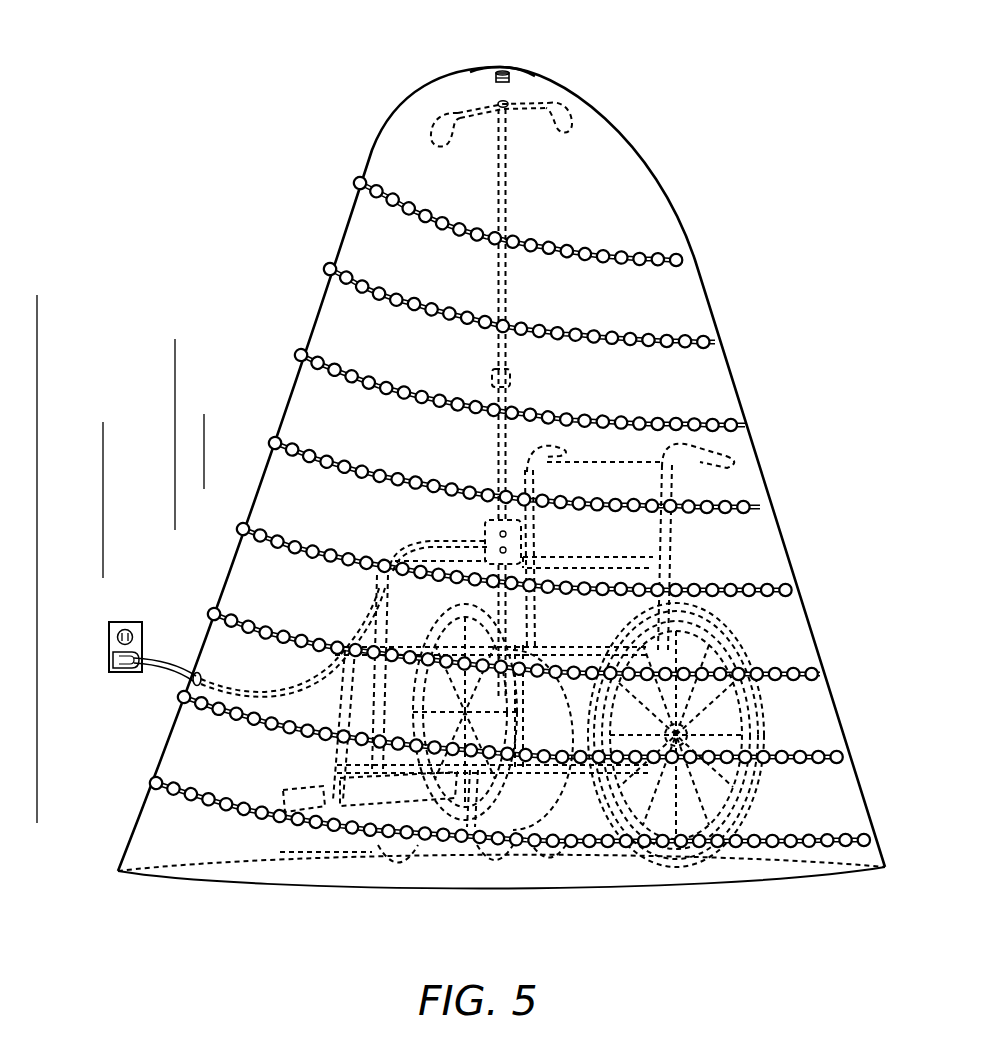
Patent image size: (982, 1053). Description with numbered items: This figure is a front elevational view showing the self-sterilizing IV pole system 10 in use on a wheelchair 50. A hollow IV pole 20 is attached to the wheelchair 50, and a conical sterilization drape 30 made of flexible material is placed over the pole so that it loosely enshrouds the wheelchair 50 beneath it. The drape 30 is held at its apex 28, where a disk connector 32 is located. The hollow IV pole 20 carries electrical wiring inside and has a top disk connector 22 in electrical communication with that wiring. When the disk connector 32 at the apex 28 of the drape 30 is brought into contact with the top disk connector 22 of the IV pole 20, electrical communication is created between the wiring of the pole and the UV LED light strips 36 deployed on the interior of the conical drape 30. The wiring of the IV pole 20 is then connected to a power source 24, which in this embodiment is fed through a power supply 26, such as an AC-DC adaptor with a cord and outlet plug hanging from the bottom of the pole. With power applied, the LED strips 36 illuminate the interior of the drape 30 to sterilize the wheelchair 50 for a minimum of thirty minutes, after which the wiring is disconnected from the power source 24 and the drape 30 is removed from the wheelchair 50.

The self-sterilizing IV pole system 10 is at (372, 88).
The IV pole 20 is at (510, 293).
The top disk connector 22 is at (506, 103).
The power source 24 is at (172, 665).
The power supply 26 is at (491, 520).
The apex 28 is at (486, 68).
The sterilization drape 30 is at (772, 385).
The disk connector 32 is at (505, 72).
The LED strips 36 is at (738, 520).
The wheelchair 50 is at (704, 453).